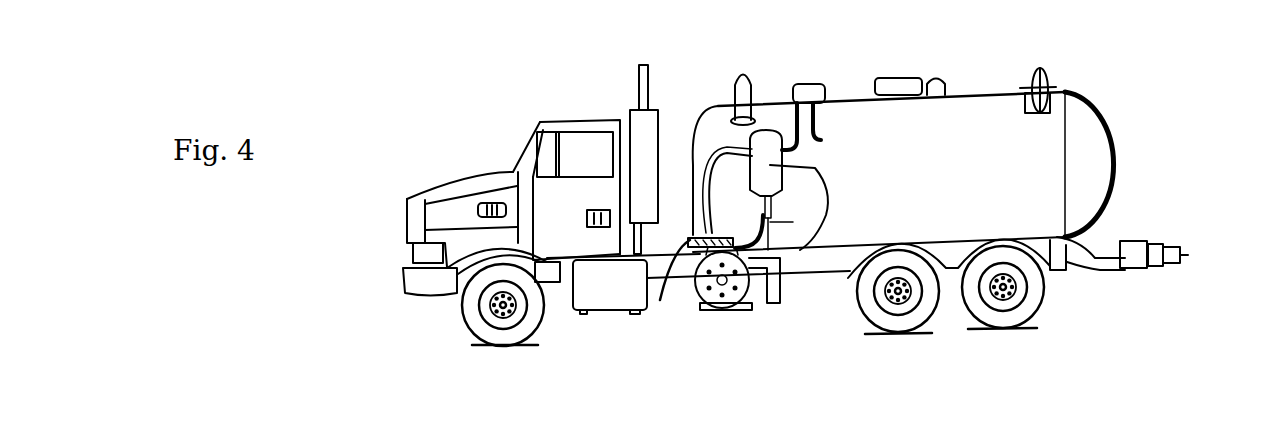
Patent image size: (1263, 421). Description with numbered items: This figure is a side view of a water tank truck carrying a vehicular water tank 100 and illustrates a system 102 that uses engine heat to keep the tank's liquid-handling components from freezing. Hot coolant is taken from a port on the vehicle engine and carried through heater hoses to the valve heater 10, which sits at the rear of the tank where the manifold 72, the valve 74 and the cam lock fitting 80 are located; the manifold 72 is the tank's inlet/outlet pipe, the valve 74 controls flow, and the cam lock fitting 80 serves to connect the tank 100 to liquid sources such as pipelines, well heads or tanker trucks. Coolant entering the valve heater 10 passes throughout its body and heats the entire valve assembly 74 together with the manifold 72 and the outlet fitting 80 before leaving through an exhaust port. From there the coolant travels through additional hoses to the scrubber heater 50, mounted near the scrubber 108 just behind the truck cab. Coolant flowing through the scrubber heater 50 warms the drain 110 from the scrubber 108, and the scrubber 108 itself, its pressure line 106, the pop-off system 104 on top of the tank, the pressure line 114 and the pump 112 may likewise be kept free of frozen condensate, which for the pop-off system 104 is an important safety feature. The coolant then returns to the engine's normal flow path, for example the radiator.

The valve heater 10 is at (1138, 230).
The scrubber heater 50 is at (763, 203).
The manifold 72 is at (1090, 238).
The valve 74 is at (1150, 240).
The cam lock fitting 80 is at (1182, 254).
The water tank 100 is at (983, 185).
The system 102 is at (493, 79).
The pop-off system 104 is at (818, 82).
The pressure line 106 is at (826, 137).
The scrubber 108 is at (808, 222).
The drain 110 is at (745, 212).
The pump 112 is at (717, 313).
The pressure line 114 is at (660, 300).